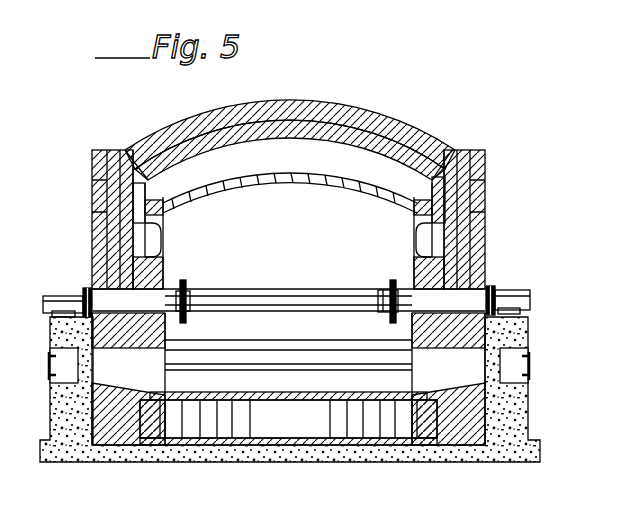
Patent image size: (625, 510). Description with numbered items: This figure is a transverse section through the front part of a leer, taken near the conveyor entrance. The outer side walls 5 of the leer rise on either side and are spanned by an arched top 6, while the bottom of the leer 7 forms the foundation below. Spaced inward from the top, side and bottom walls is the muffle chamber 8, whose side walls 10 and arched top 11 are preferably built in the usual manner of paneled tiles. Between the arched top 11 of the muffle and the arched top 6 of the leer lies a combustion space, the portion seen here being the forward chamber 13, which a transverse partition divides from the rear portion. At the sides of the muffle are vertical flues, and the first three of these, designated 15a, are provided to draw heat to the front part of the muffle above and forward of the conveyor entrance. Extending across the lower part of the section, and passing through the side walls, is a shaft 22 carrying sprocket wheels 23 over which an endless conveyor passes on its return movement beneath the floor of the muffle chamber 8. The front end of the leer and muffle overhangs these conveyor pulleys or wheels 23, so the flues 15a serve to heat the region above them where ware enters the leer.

The outer side walls 5 is at (92, 225).
The arched top 6 is at (312, 100).
The bottom of the leer 7 is at (250, 450).
The muffle chamber 8 is at (288, 331).
The side walls of the muffle 10 is at (165, 267).
The arched top of the muffle 11 is at (270, 178).
The forward chamber 13 is at (290, 150).
The first three side flues 15a is at (435, 186).
The shaft 22 is at (300, 298).
The sprocket wheels 23 is at (189, 318).